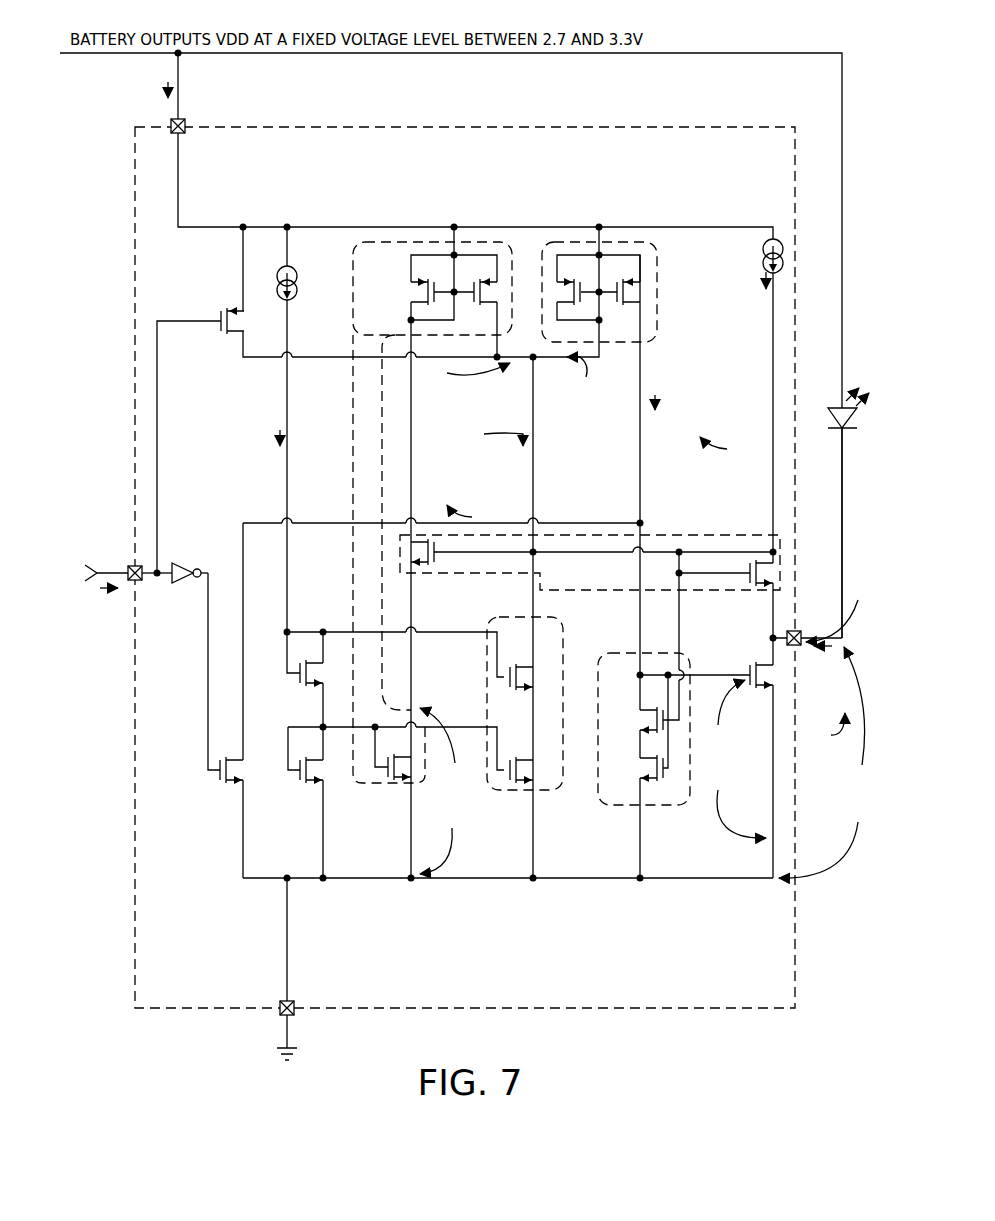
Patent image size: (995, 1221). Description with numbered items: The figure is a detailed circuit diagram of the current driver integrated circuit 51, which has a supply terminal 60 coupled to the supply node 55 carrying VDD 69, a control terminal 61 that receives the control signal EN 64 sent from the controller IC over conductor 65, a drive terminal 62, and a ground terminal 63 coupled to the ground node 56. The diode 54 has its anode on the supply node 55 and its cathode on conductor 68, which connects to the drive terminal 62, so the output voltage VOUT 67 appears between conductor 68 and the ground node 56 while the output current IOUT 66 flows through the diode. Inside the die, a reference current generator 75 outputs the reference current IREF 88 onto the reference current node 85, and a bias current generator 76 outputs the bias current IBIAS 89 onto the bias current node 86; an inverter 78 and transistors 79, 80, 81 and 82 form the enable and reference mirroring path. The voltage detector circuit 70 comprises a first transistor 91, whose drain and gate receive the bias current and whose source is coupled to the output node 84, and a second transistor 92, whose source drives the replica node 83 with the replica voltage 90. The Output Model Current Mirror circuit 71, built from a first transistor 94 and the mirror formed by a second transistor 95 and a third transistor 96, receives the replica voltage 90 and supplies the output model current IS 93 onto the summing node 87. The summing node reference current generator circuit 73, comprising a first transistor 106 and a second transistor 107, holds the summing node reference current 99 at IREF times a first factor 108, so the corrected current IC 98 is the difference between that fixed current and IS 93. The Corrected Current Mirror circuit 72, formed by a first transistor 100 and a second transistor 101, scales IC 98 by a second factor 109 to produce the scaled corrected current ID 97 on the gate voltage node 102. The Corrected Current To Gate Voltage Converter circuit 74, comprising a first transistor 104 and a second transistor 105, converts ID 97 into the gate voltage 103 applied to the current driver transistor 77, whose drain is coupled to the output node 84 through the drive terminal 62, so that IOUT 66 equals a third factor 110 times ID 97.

The current driver integrated circuit 51 is at (452, 125).
The diode 54 is at (850, 432).
The supply node 55 is at (179, 101).
The ground node 56 is at (287, 921).
The supply terminal 60 is at (186, 132).
The control terminal 61 is at (137, 580).
The drive terminal 62 is at (797, 659).
The ground terminal 63 is at (280, 1013).
The control signal EN 64 is at (105, 589).
The control signal from controller IC 65 is at (98, 571).
The output current IOUT 66 is at (832, 648).
The output voltage VOUT 67 is at (853, 816).
The conductor 68 is at (843, 488).
The supply voltage VDD 69 is at (163, 92).
The voltage detector circuit 70 is at (730, 534).
The Output Model Current Mirror (OMCM) circuit 71 is at (421, 241).
The Corrected Current Mirror (CCM) circuit 72 is at (664, 241).
The summing node reference current generator circuit 73 is at (505, 792).
The Corrected Current To Gate Voltage Converter (CCGVC) circuit 74 is at (666, 808).
The reference current generator 75 is at (266, 291).
The bias current generator 76 is at (763, 248).
The current driver transistor 77 is at (748, 664).
The inverter 78 is at (184, 566).
The transistor 79 is at (245, 321).
The transistor 80 is at (244, 770).
The transistor 81 is at (325, 673).
The transistor 82 is at (325, 770).
The replica node 83 is at (411, 618).
The output node 84 is at (773, 618).
The reference current node 85 is at (285, 391).
The bias current node 86 is at (773, 328).
The summing node 87 is at (535, 467).
The reference current IREF 88 is at (275, 434).
The bias current IBIAS 89 is at (766, 279).
The replica voltage 90 is at (446, 824).
The first transistor 91 is at (750, 569).
The second transistor 92 is at (436, 559).
The output model current IS 93 is at (467, 395).
The first transistor 94 is at (398, 757).
The second transistor 95 is at (436, 287).
The third transistor 96 is at (485, 303).
The scaled corrected current ID 97 is at (659, 400).
The corrected current IC 98 is at (585, 396).
The summing node reference current 99 is at (468, 466).
The first transistor 100 is at (582, 287).
The second transistor 101 is at (628, 303).
The gate voltage node 102 is at (641, 468).
The gate voltage 103 is at (712, 785).
The first transistor 104 is at (640, 721).
The second transistor 105 is at (640, 769).
The first transistor 106 is at (535, 677).
The second transistor 107 is at (535, 770).
The first factor 108 is at (475, 515).
The second factor 109 is at (729, 447).
The third factor 110 is at (825, 728).